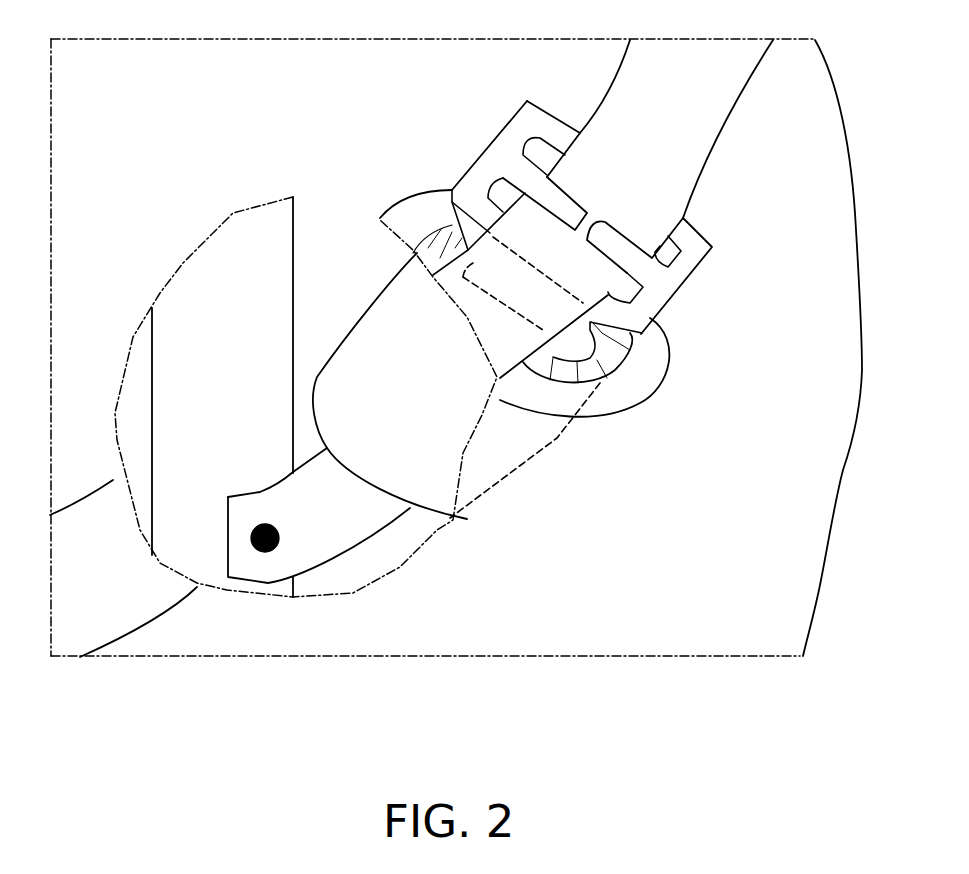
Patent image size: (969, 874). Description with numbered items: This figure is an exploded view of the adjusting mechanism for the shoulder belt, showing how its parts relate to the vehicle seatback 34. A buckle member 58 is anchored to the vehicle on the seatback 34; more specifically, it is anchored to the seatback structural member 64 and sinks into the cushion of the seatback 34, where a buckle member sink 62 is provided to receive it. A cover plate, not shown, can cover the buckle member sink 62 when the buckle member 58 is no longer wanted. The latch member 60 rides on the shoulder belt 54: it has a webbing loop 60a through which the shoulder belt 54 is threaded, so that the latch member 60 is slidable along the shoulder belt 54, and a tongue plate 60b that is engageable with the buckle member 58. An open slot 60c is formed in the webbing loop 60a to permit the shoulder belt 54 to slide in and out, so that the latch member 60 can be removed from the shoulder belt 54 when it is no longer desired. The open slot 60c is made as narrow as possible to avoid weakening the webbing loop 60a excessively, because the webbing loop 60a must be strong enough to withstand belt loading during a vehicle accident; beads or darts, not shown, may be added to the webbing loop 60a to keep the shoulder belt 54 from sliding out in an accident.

The seatback 34 is at (183, 118).
The shoulder belt 54 is at (693, 165).
The buckle member 58 is at (465, 455).
The latch member 60 is at (548, 148).
The webbing loop 60a is at (667, 278).
The tongue plate 60b is at (637, 350).
The open slot 60c is at (588, 223).
The buckle member sink 62 is at (607, 392).
The seatback structural member 64 is at (255, 345).